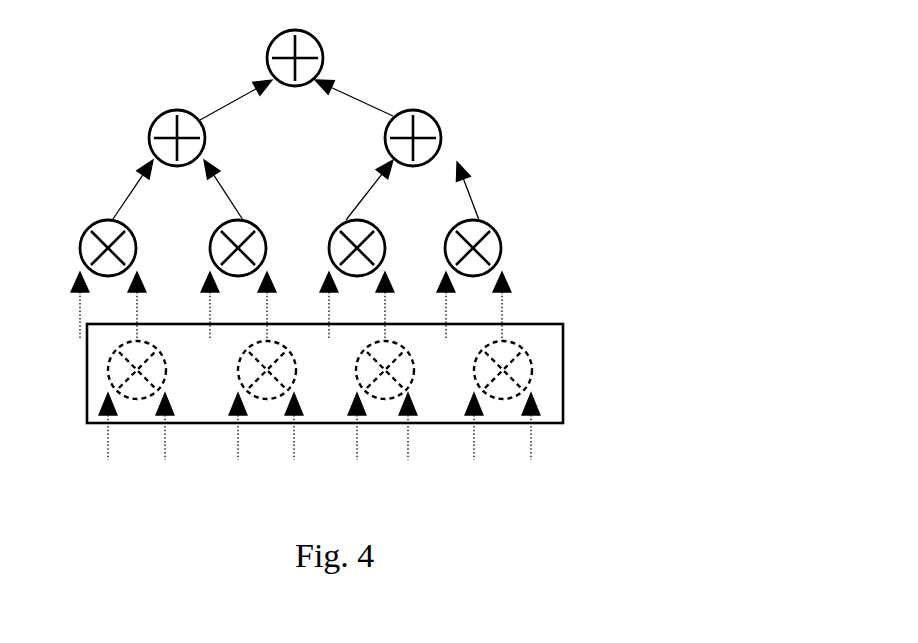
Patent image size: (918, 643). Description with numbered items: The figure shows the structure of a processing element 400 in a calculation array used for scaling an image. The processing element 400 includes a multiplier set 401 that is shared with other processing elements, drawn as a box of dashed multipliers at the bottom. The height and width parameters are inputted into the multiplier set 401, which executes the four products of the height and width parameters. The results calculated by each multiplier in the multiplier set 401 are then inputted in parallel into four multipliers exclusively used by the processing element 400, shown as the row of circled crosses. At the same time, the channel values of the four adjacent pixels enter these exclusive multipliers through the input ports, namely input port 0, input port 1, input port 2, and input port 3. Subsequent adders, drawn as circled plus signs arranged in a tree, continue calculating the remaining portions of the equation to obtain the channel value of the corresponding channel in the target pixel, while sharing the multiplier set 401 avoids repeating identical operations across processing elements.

The processing element 400 is at (615, 32).
The multiplier set 401 is at (564, 377).
The input port input0 0 is at (60, 305).
The input port input1 1 is at (190, 305).
The input port input2 2 is at (309, 305).
The input port input3 3 is at (426, 305).